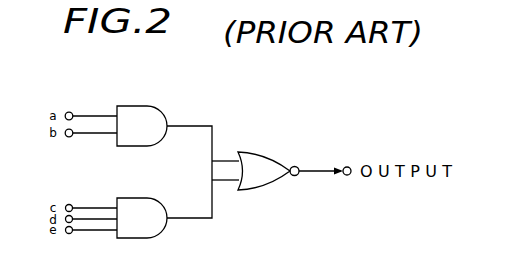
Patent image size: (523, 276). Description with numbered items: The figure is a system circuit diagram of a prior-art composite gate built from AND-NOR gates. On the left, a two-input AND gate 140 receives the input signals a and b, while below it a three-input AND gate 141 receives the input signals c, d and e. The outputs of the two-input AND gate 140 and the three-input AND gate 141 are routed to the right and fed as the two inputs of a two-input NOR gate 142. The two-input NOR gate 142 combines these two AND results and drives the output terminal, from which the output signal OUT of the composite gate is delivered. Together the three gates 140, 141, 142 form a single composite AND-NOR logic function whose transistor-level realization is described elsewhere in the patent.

The 2-input AND gate 140 is at (148, 105).
The 3-input AND gate 141 is at (157, 190).
The 2-input NOR gate 142 is at (275, 152).